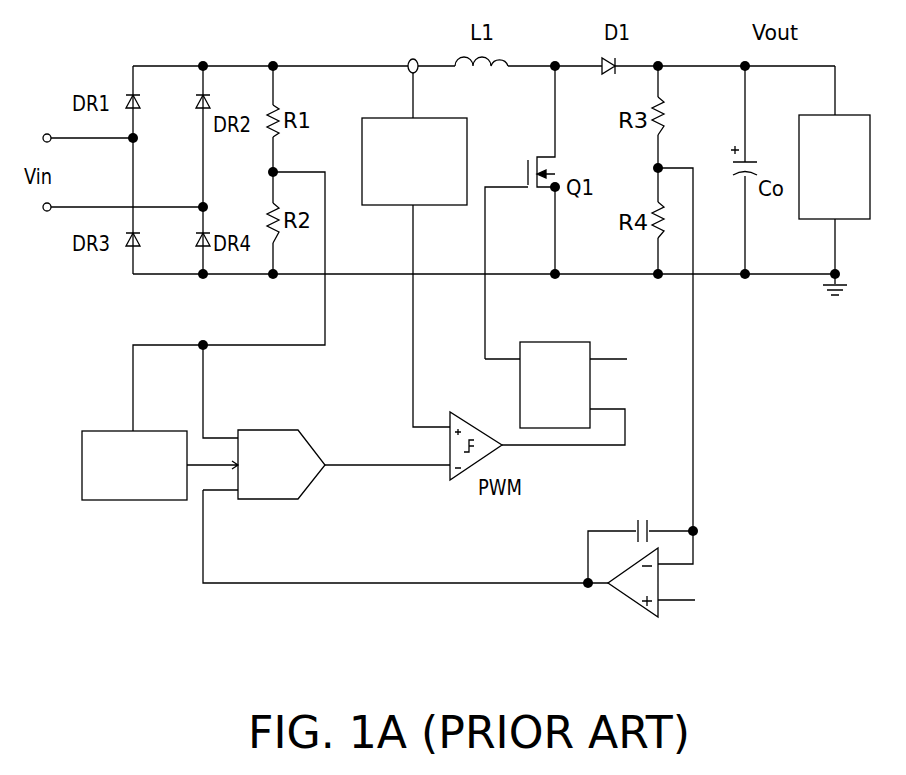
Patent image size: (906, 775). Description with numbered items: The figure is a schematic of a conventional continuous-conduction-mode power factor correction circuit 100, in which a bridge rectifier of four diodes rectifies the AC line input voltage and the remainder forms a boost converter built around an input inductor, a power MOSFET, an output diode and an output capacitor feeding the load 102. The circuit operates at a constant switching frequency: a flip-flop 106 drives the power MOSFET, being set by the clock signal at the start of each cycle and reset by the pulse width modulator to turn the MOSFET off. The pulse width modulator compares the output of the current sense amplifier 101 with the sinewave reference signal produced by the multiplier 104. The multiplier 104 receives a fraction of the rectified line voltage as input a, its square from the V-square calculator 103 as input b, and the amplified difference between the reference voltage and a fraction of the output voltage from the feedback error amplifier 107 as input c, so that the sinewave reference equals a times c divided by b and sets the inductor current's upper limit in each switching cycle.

The CCM PFC circuit 100 is at (830, 656).
The current sense amplifier 101 is at (362, 135).
The load 102 is at (817, 220).
The V-square calculator 103 is at (108, 431).
The multiplier 104 is at (290, 430).
The flip-flop 106 is at (570, 342).
The feedback error amplifier 107 is at (635, 603).